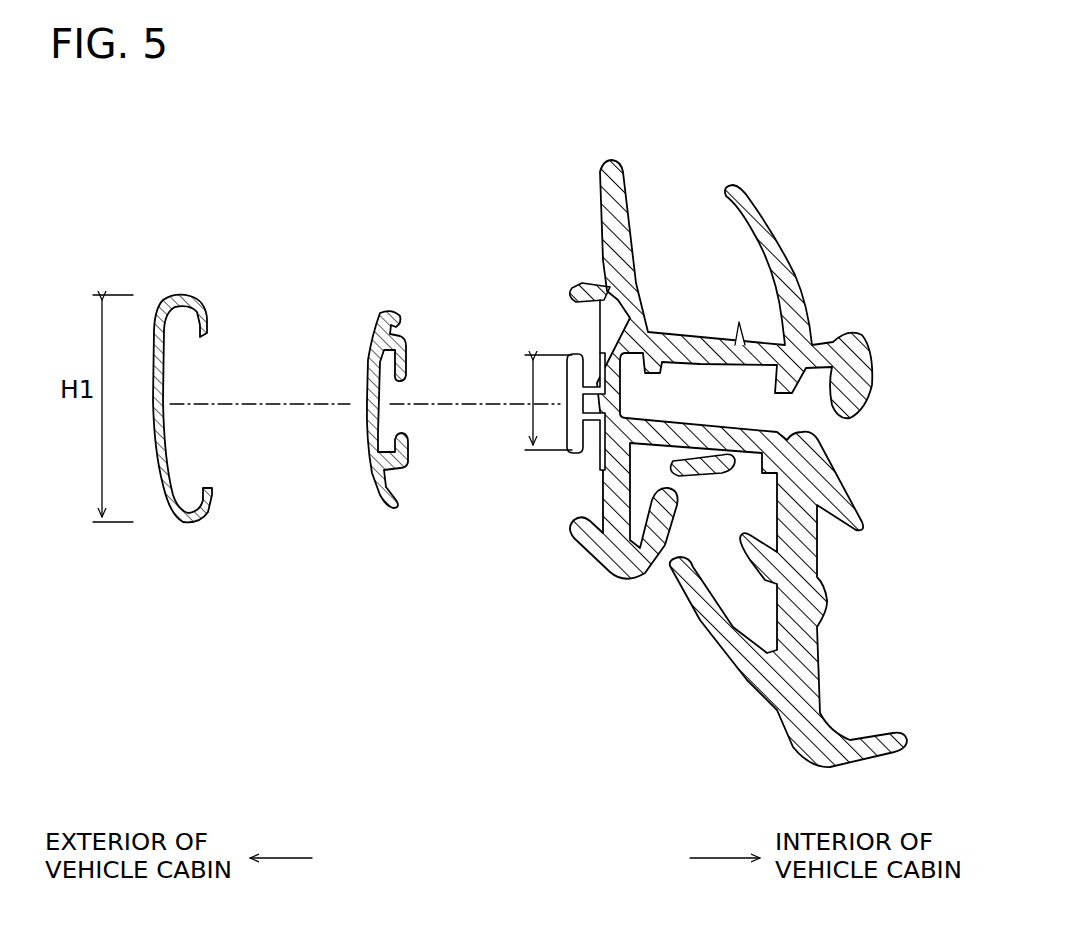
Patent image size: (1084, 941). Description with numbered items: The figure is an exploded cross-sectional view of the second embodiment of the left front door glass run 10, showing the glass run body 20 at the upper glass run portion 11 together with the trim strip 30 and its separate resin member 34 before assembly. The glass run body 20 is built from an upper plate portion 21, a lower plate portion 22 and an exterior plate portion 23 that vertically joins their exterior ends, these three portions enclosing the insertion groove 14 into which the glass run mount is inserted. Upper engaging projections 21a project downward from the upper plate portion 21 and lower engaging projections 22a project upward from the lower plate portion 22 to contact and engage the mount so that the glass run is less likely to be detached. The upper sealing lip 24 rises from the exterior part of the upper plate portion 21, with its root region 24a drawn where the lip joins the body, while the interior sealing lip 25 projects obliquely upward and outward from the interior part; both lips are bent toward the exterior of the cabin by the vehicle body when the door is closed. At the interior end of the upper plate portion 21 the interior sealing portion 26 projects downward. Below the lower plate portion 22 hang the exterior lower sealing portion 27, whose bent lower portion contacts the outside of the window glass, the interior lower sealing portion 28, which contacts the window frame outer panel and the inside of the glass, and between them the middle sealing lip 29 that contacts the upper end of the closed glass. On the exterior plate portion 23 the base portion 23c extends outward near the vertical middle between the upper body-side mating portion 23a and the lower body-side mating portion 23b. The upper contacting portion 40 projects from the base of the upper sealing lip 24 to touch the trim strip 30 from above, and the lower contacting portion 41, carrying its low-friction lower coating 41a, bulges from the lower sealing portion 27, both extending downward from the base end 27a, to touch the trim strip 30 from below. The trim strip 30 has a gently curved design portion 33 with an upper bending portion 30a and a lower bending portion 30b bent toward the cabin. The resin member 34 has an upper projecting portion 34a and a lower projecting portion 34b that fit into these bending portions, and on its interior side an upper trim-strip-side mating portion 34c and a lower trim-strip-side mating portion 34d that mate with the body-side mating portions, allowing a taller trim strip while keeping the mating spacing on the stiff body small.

The left front door glass run 10 is at (694, 457).
The upper glass run portion 11 is at (600, 270).
The insertion groove 14 is at (823, 440).
The glass run body 20 is at (694, 457).
The upper plate portion 21 is at (690, 332).
The upper engaging projection 21a is at (662, 328).
The lower plate portion 22 is at (762, 457).
The lower engaging projection 22a is at (744, 318).
The exterior plate portion 23 is at (590, 345).
The upper body-side mating portion 23a is at (565, 350).
The lower body-side mating portion 23b is at (568, 448).
The base portion 23c is at (583, 450).
The upper sealing lip 24 is at (598, 185).
The lip base 24a is at (643, 290).
The interior sealing lip 25 is at (800, 277).
The interior sealing portion 26 is at (868, 355).
The lower sealing portion 27 is at (586, 578).
The base end 27a is at (637, 583).
The lower sealing portion 28 is at (813, 653).
The middle sealing lip 29 is at (710, 476).
The trim strip 30 is at (157, 487).
The upper bending portion 30a is at (187, 298).
The lower bending portion 30b is at (197, 523).
The design portion 33 is at (150, 343).
The resin member 34 is at (368, 355).
The upper projecting portion 34a is at (390, 318).
The lower projecting portion 34b is at (397, 510).
The upper trim-strip-side mating portion 34c is at (402, 380).
The lower trim-strip-side mating portion 34d is at (408, 452).
The upper contacting portion 40 is at (600, 283).
The lower contacting portion 41 is at (583, 530).
The lower coating 41a is at (573, 530).